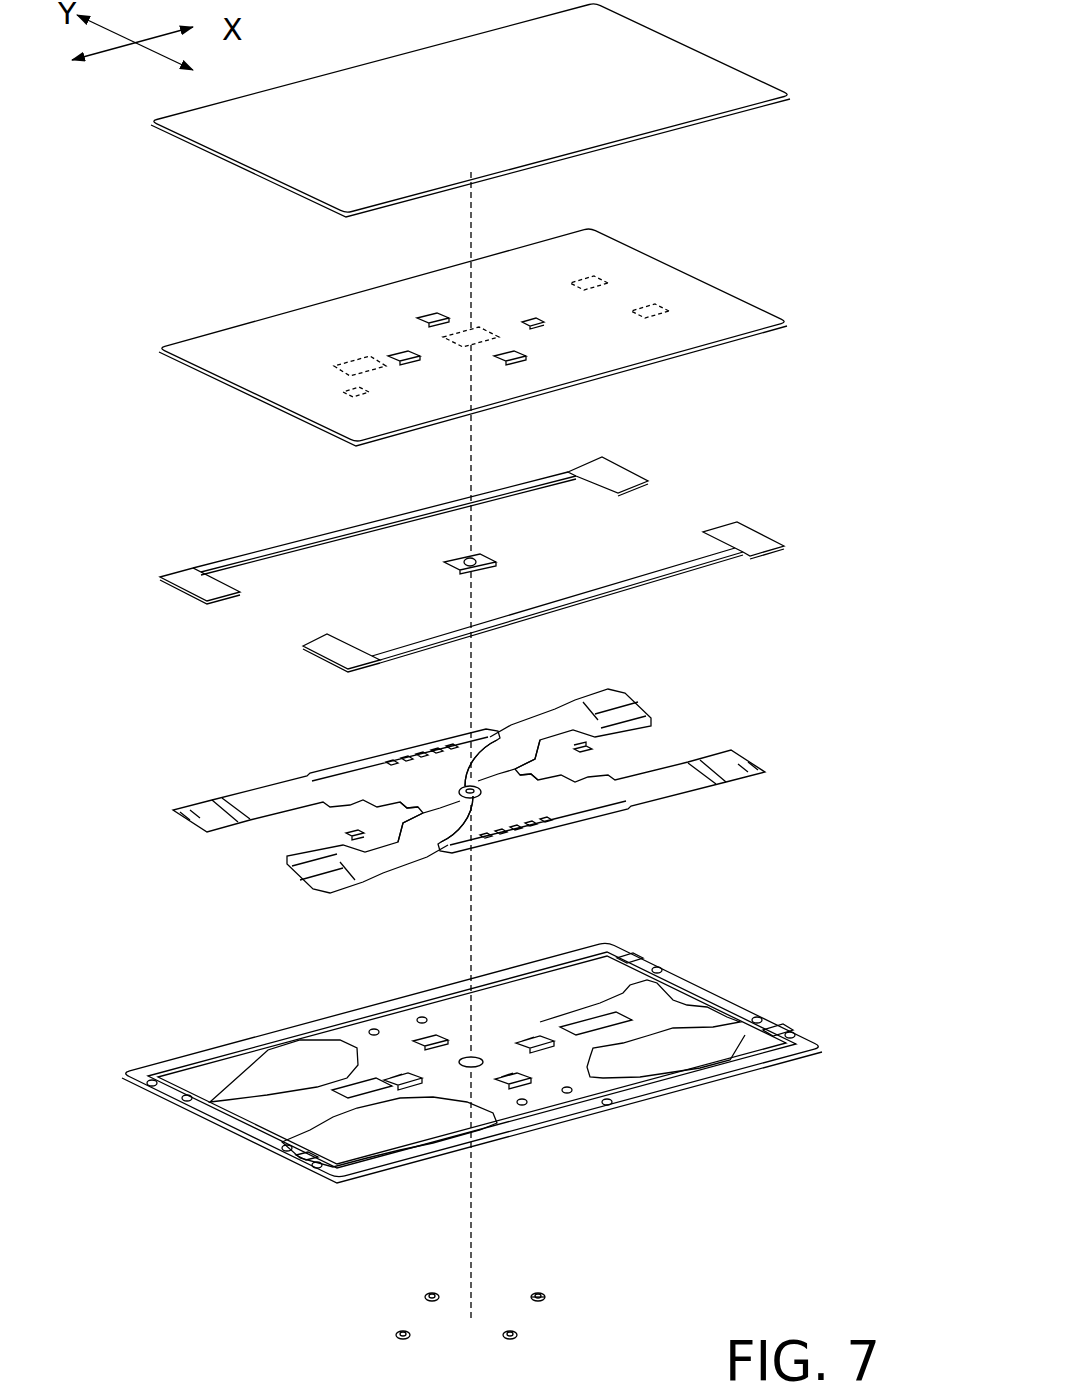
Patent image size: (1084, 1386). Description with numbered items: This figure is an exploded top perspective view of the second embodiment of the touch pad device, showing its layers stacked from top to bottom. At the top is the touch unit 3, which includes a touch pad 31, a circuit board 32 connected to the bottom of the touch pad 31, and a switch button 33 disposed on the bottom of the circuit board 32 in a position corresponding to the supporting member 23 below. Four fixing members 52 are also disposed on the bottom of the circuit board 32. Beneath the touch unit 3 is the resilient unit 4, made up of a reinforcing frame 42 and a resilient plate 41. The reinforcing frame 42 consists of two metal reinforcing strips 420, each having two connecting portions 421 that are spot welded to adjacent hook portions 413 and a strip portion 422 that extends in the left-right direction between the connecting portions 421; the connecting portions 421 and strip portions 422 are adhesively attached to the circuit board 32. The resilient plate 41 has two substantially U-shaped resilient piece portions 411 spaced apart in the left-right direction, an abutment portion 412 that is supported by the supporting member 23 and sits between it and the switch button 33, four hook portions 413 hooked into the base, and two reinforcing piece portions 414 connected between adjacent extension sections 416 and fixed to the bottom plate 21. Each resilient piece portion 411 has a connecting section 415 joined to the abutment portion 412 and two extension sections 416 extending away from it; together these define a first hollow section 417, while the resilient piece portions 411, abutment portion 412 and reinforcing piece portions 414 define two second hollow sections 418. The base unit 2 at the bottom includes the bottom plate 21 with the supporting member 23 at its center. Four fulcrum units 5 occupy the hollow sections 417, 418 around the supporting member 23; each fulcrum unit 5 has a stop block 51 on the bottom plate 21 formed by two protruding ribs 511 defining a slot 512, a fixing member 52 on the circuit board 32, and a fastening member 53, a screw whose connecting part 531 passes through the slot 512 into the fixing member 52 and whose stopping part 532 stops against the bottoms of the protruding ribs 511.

The touch unit 3 is at (775, 59).
The touch pad 31 is at (771, 90).
The circuit board 32 is at (473, 335).
The fixing member 52 is at (421, 320).
The resilient unit 4 is at (910, 545).
The reinforcing frame 42 is at (705, 505).
The reinforcing strip 420 is at (182, 597).
The connecting portion 421 is at (193, 578).
The strip portion 422 is at (320, 537).
The switch button 33 is at (493, 557).
The resilient plate 41 is at (785, 765).
The resilient piece portion 411 is at (267, 787).
The abutment portion 412 is at (517, 782).
The hook portion 413 is at (172, 818).
The reinforcing piece portion 414 is at (338, 773).
The connecting section 415 is at (432, 803).
The extension section 416 is at (238, 808).
The first hollow section 417 is at (408, 812).
The second hollow section 418 is at (452, 770).
The base unit 2 is at (828, 1045).
The bottom plate 21 is at (673, 1012).
The supporting member 23 is at (477, 1070).
The stop block 51 is at (550, 1049).
The protruding rib 511 is at (390, 1074).
The slot 512 is at (392, 1088).
The fulcrum unit 5 is at (418, 1297).
The fastening member 53 is at (676, 1255).
The connecting part 531 is at (540, 1297).
The stopping part 532 is at (540, 1298).